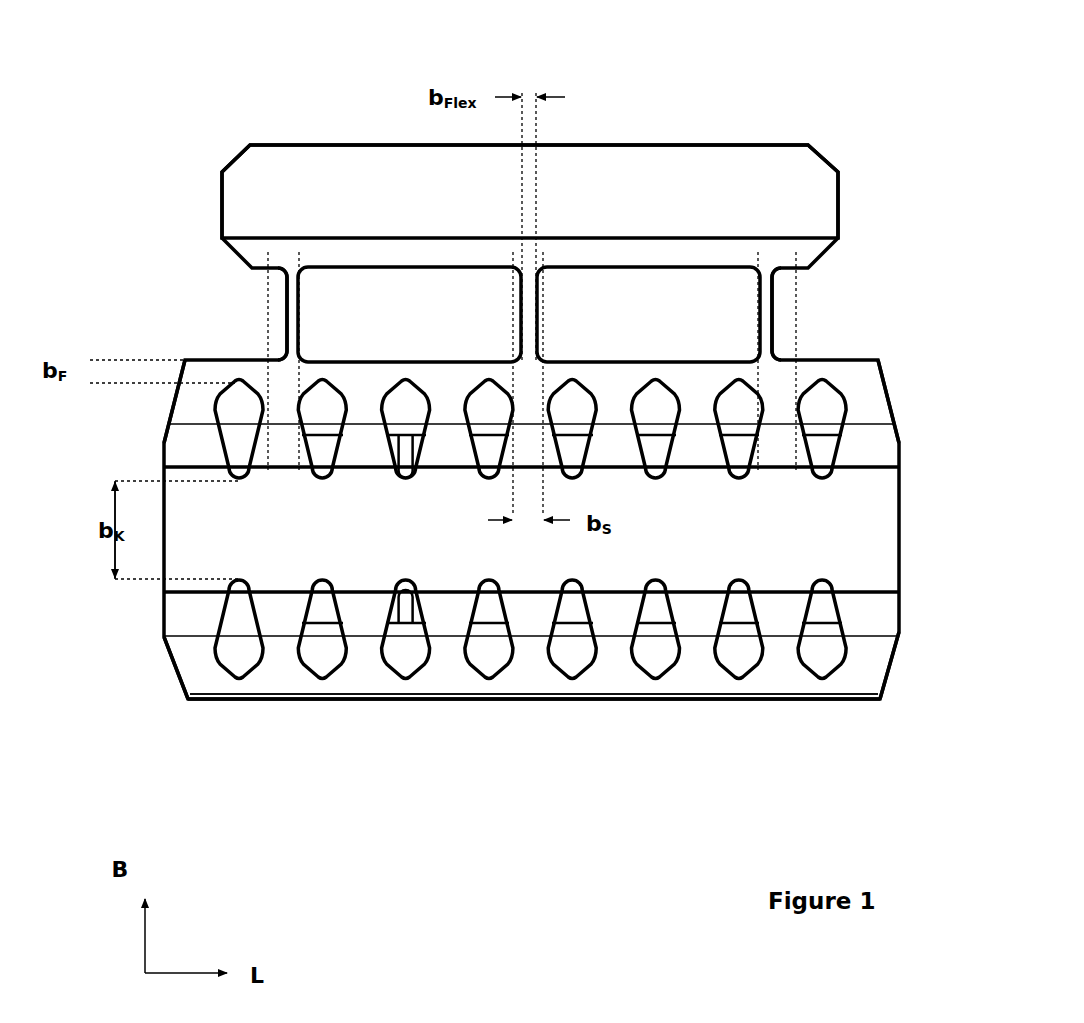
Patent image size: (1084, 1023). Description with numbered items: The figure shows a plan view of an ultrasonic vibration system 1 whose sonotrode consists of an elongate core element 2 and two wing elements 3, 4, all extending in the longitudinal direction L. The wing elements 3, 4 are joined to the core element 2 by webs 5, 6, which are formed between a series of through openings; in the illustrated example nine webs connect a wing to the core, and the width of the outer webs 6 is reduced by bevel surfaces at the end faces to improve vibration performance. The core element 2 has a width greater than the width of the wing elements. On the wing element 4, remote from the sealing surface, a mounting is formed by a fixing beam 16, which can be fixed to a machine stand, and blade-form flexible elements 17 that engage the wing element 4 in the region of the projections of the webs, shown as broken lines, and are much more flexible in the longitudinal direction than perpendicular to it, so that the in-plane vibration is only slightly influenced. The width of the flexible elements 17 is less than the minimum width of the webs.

The ultrasonic vibration system 1 is at (900, 208).
The core element 2 is at (868, 520).
The wing element 3 is at (208, 682).
The wing element 4 is at (197, 383).
The web 5 is at (768, 438).
The outer web 6 is at (932, 662).
The fixing beam 16 is at (303, 173).
The flexible element 17 is at (768, 308).